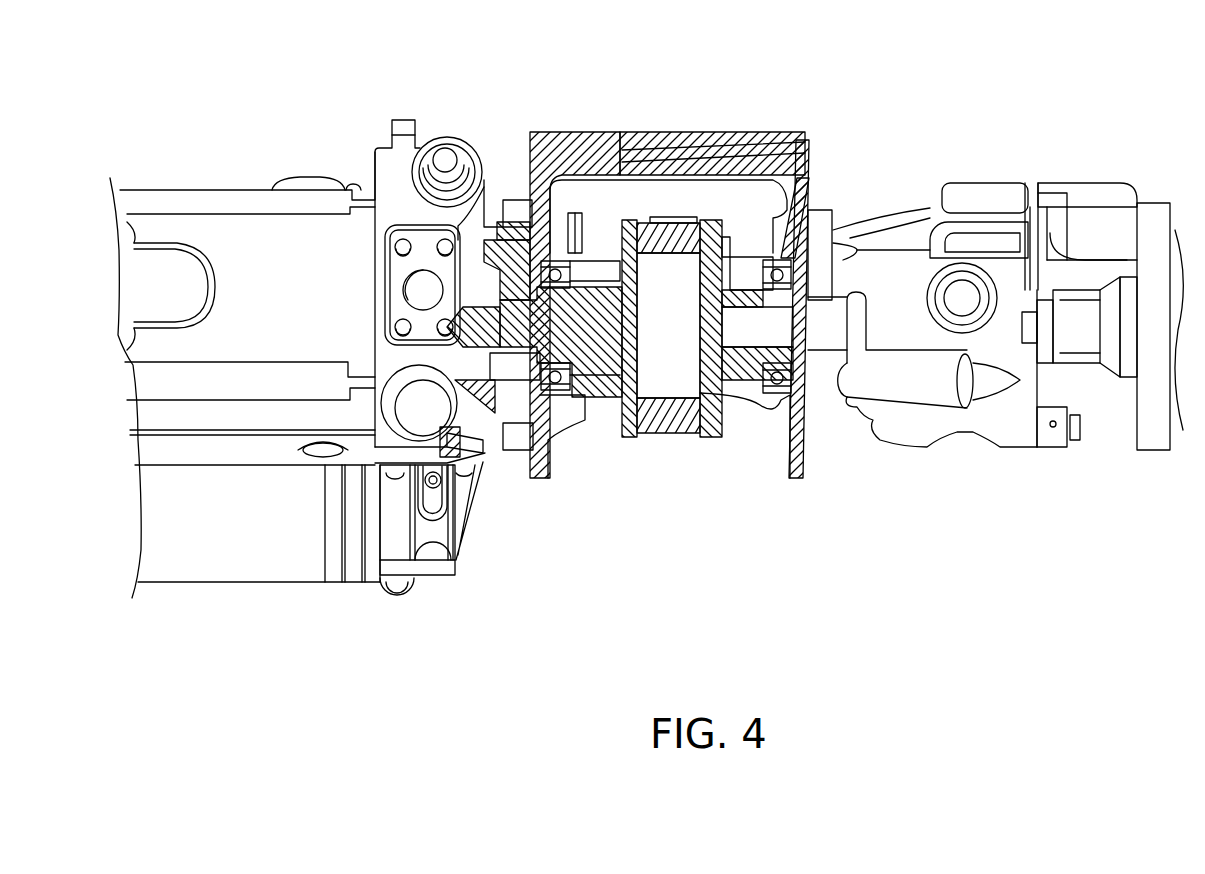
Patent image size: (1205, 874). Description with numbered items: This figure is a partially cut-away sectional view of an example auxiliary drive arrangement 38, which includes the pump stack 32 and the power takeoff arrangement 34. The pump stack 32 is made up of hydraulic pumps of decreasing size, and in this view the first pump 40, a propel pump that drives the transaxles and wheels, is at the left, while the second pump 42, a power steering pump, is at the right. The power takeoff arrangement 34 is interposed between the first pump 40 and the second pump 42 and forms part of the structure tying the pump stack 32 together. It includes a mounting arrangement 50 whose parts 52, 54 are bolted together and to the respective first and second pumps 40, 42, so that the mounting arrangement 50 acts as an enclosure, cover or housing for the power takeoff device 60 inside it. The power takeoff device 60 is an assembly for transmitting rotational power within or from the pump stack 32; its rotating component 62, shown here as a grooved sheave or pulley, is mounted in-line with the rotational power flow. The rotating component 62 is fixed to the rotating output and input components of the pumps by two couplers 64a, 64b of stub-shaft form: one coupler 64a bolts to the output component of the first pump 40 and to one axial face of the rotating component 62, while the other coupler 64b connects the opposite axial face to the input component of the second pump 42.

The pump stack 32 is at (1082, 181).
The power takeoff arrangement 34 is at (651, 128).
The auxiliary drive arrangement 38 is at (764, 58).
The first pump 40 is at (215, 203).
The second pump 42 is at (921, 220).
The mounting arrangement 50 is at (811, 170).
The part of mounting arrangement 52 is at (587, 143).
The part of mounting arrangement 54 is at (795, 136).
The power takeoff device 60 is at (689, 211).
The rotating component 62 is at (680, 417).
The coupler 64a is at (602, 392).
The coupler 64b is at (738, 400).